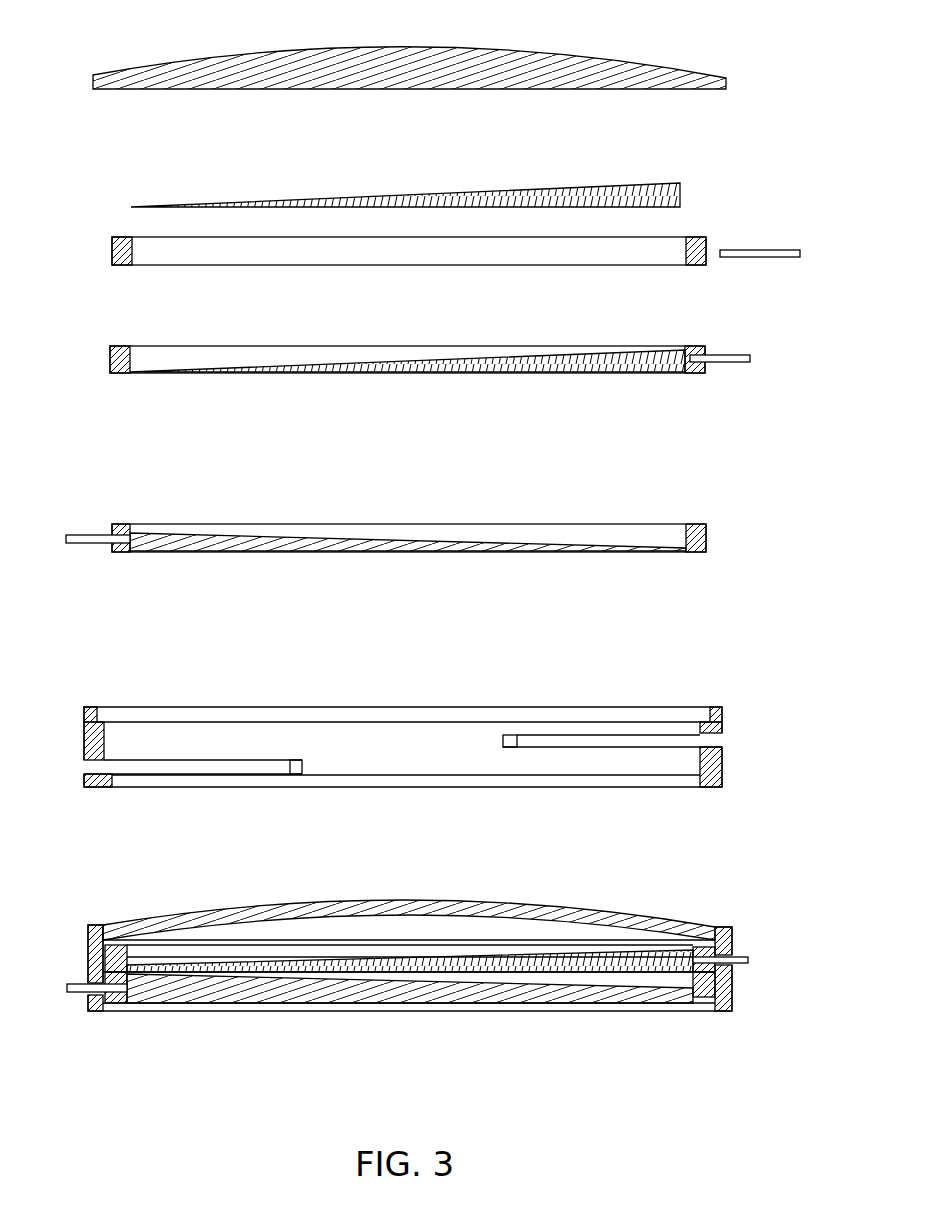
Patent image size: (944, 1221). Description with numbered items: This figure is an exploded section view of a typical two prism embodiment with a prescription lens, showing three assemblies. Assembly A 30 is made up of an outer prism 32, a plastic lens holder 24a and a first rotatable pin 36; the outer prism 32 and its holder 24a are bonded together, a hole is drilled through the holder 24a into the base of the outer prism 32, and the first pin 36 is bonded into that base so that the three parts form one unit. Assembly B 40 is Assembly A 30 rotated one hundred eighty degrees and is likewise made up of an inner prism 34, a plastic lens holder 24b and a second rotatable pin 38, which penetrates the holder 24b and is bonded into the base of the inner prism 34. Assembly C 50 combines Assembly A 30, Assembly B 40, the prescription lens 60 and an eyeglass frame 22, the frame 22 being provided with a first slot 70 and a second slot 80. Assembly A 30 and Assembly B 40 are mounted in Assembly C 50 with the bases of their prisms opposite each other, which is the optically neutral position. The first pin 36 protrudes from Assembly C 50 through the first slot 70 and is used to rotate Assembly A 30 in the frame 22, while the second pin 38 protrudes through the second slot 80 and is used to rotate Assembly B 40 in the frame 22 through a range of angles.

The prescription lens 60 is at (605, 52).
The outer prism 32 is at (680, 192).
The plastic lens holder 24a is at (668, 250).
The first rotatable pin 36 is at (757, 257).
The Assembly A 30 is at (317, 402).
The plastic lens holder 24b is at (125, 524).
The inner prism 34 is at (410, 550).
The second rotatable pin 38 is at (80, 530).
The Assembly B 40 is at (270, 566).
The eyeglass frame 22 is at (638, 712).
The first slot 70 is at (720, 742).
The second slot 80 is at (90, 767).
The Assembly C 50 is at (410, 1022).